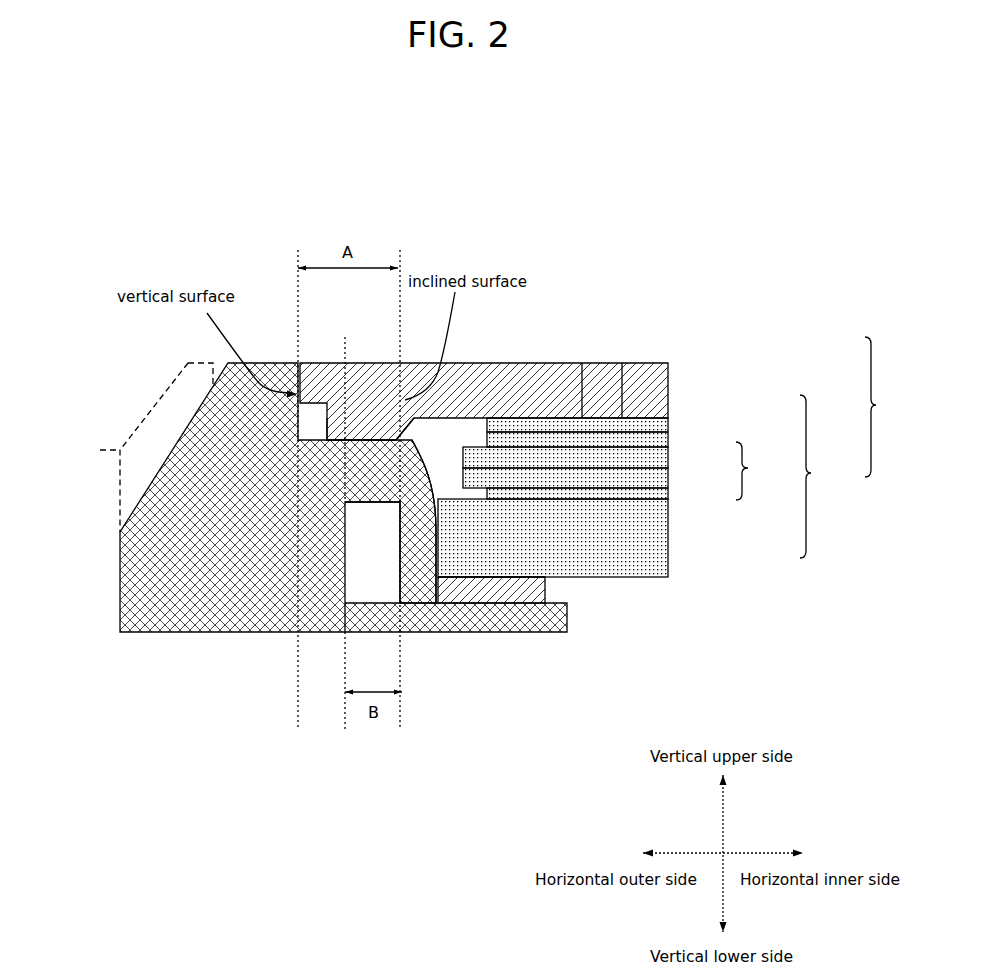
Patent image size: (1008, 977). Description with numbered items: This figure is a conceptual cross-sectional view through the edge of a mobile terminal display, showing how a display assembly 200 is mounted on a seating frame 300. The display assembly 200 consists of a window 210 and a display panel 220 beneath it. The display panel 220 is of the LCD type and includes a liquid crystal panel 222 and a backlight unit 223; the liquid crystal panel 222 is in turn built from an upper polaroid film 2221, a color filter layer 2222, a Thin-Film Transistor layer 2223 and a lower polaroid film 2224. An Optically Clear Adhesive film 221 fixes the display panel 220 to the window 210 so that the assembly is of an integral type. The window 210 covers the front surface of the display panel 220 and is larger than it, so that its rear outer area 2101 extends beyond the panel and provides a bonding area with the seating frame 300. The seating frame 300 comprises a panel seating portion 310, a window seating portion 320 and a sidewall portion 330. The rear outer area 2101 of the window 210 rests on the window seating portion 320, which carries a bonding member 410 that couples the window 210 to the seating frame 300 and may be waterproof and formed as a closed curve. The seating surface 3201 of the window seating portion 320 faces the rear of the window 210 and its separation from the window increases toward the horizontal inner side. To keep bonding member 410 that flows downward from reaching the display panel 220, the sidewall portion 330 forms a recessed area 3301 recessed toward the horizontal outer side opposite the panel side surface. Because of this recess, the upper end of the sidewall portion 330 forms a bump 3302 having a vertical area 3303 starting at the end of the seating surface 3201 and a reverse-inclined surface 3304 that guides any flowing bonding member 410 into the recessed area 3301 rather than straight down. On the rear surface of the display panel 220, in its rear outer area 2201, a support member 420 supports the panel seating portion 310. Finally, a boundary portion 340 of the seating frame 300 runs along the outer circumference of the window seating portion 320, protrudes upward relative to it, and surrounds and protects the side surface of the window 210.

The display assembly 200 is at (891, 407).
The window 210 is at (642, 392).
The rear outer area of the window 2101 is at (417, 402).
The display panel 220 is at (825, 476).
The Optically Clear Adhesive (OCA) film 221 is at (660, 428).
The liquid crystal panel 222 is at (762, 471).
The upper polaroid film 2221 is at (648, 445).
The color filter layer 2222 is at (650, 462).
The Thin-Film Transistor (TFT) layer 2223 is at (645, 479).
The lower polaroid film 2224 is at (648, 497).
The backlight unit 223 is at (648, 542).
The rear outer area of the display panel 2201 is at (513, 577).
The seating frame 300 is at (168, 426).
The panel seating portion 310 is at (488, 630).
The window seating portion 320 is at (247, 408).
The seating surface 3201 is at (302, 459).
The sidewall portion 330 is at (312, 548).
The recessed area 3301 is at (343, 603).
The bump 3302 is at (369, 478).
The vertical area 3303 is at (438, 603).
The reverse-inclined surface 3304 is at (360, 538).
The boundary portion 340 is at (100, 450).
The bonding member 410 is at (340, 428).
The support member 420 is at (567, 613).